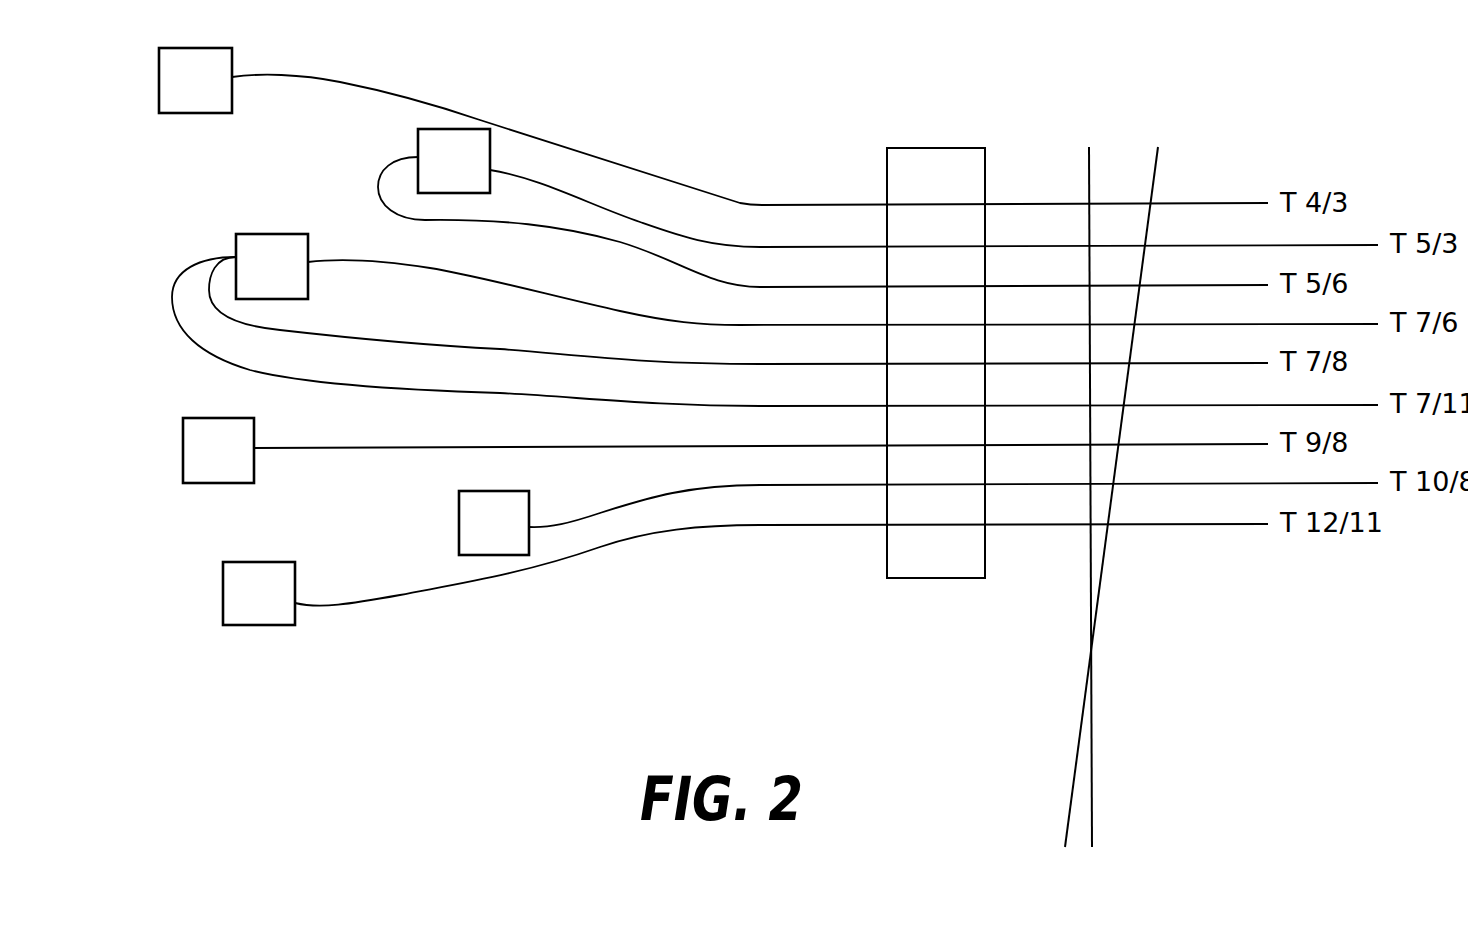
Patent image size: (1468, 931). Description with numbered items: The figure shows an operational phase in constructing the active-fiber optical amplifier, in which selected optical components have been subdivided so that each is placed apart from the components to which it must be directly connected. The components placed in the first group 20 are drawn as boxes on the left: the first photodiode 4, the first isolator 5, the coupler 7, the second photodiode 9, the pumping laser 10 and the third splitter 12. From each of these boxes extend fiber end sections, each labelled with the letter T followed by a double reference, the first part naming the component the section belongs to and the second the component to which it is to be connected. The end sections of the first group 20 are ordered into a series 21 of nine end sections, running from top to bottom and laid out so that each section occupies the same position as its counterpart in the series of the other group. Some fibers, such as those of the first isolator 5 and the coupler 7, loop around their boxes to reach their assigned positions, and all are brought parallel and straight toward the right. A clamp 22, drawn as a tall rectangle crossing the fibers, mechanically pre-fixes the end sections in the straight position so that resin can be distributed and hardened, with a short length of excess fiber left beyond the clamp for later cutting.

The first photodiode 4 is at (195, 80).
The first isolator 5 is at (454, 161).
The coupler 7 is at (272, 266).
The second photodiode 9 is at (218, 450).
The pumping laser 10 is at (494, 523).
The third splitter 12 is at (259, 593).
The first group 20 is at (396, 66).
The series of end sections 21 is at (1013, 186).
The clamp 22 is at (922, 148).